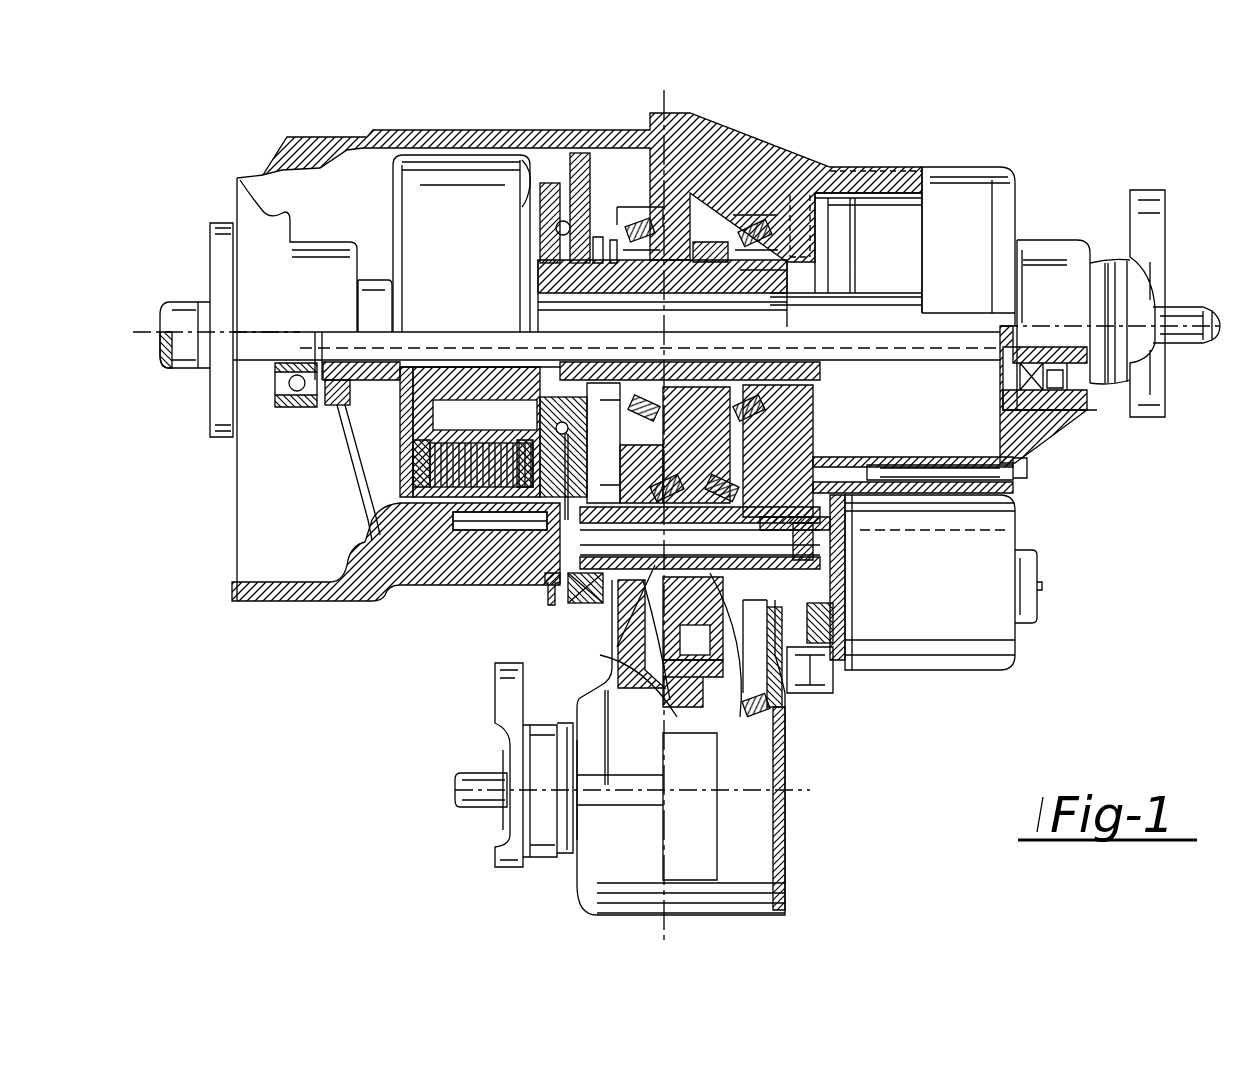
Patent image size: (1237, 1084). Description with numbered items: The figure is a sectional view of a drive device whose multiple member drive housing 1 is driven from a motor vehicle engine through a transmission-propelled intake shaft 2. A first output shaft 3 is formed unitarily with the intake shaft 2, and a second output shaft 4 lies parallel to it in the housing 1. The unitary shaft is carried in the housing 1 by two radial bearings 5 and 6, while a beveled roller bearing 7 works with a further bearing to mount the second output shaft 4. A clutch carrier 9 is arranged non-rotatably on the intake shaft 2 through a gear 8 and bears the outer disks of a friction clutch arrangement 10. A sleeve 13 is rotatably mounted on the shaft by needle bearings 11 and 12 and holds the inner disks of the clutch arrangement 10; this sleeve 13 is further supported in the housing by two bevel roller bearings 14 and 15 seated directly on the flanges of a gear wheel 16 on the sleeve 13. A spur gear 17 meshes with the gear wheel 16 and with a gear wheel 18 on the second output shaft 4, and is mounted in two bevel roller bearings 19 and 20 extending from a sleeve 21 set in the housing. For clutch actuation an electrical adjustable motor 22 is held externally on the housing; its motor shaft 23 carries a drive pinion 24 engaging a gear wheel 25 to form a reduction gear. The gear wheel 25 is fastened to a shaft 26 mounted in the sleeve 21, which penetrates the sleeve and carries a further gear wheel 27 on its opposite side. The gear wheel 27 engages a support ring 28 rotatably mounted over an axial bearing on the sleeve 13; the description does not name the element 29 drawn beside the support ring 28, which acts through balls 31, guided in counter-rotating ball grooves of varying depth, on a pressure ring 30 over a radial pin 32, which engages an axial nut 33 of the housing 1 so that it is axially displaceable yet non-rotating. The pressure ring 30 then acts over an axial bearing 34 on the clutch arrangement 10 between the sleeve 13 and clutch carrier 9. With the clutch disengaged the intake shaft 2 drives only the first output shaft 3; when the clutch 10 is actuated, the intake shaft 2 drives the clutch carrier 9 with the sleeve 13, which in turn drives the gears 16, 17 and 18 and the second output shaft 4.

The drive housing 1 is at (288, 137).
The intake shaft 2 is at (243, 347).
The first output shaft 3 is at (957, 333).
The second output shaft 4 is at (477, 800).
The radial bearing 5 is at (287, 410).
The radial bearing 6 is at (1030, 387).
The beveled roller bearing 7 is at (783, 727).
The gear 8 is at (323, 410).
The clutch carrier 9 is at (397, 417).
The friction clutch arrangement 10 is at (407, 493).
The needle bearing 11 is at (478, 390).
The needle bearing 12 is at (775, 282).
The sleeve 13 is at (530, 378).
The bevel roller bearing 14 is at (633, 222).
The bevel roller bearing 15 is at (770, 222).
The gear wheel 16 is at (697, 253).
The spur gear 17 is at (725, 650).
The gear wheel 18 is at (687, 670).
The bevel roller bearing 19 is at (785, 700).
The bevel roller bearing 20 is at (617, 645).
The sleeve 21 is at (573, 593).
The electrical adjustable motor 22 is at (977, 577).
The motor shaft 23 is at (823, 587).
The drive pinion 24 is at (817, 670).
The gear wheel 25 is at (815, 518).
The shaft 26 is at (803, 530).
The gear wheel 27 is at (543, 590).
The support ring 28 is at (540, 268).
The sleeve 29 is at (603, 200).
The pressure ring 30 is at (552, 213).
The balls 31 is at (545, 240).
The radial pin 32 is at (532, 517).
The axial nut 33 is at (480, 513).
The axial bearing 34 is at (527, 195).